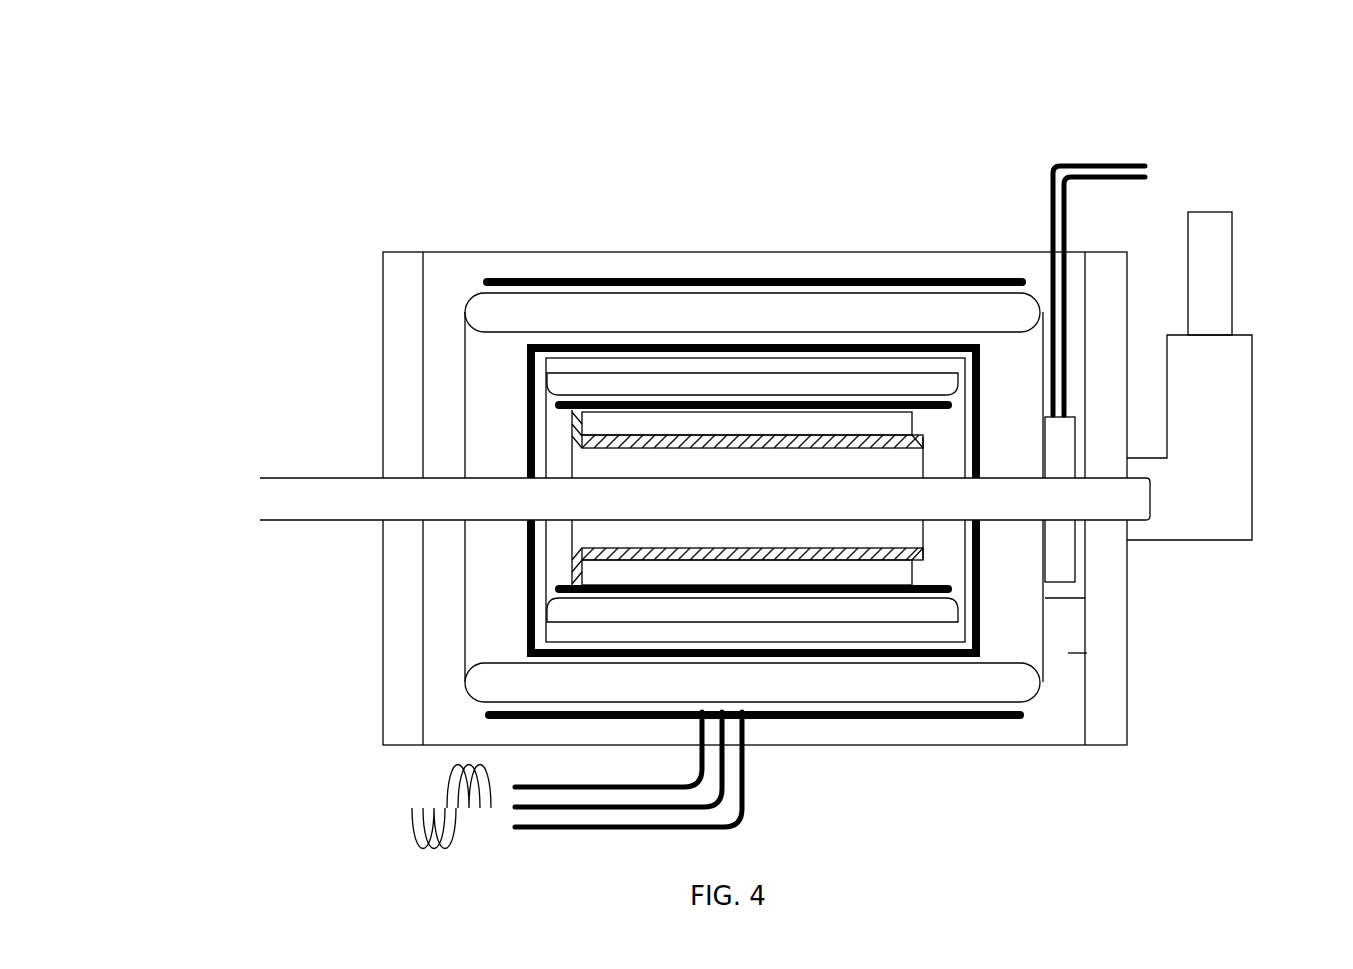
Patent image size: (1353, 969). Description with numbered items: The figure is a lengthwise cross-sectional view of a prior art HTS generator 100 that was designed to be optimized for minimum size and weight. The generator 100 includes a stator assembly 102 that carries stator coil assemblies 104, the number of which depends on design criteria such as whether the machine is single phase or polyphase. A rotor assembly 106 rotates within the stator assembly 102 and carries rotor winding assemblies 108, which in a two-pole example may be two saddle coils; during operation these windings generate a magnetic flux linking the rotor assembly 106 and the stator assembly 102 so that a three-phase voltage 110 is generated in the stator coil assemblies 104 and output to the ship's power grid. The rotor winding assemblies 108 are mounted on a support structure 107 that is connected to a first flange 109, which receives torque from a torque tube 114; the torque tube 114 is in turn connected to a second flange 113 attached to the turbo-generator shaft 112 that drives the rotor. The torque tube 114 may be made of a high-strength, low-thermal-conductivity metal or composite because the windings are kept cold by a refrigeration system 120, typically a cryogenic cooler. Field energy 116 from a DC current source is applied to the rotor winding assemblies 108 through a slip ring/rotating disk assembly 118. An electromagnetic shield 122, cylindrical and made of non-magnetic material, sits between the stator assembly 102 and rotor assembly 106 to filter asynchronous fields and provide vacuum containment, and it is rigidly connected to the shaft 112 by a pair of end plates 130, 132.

The HTS generator 100 is at (452, 102).
The stator assembly 102 is at (633, 262).
The stator coil assemblies 104 is at (835, 313).
The rotor assembly 106 is at (798, 577).
The support structure 107 is at (863, 593).
The rotor winding assemblies 108 is at (737, 610).
The first flange 109 is at (573, 418).
The three-phase voltage 110 is at (402, 823).
The turbo-generator shaft 112 is at (295, 478).
The second flange 113 is at (925, 458).
The torque tube 114 is at (705, 437).
The field energy 116 is at (1172, 142).
The slip ring/rotating disk assembly 118 is at (1060, 582).
The refrigeration system 120 is at (1257, 397).
The electromagnetic shield 122 is at (958, 655).
The end plate 130 is at (527, 443).
The end plate 132 is at (982, 350).